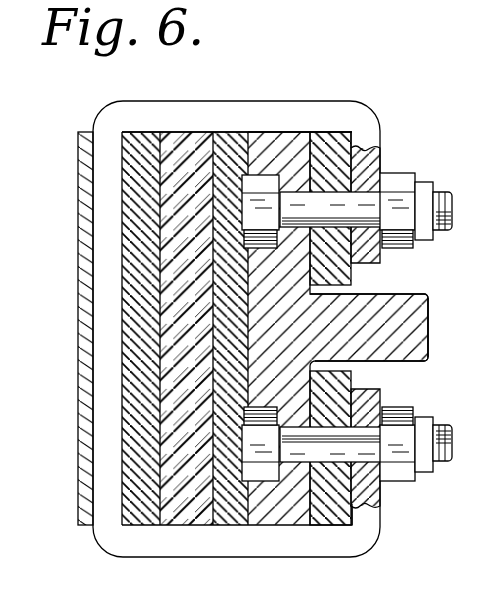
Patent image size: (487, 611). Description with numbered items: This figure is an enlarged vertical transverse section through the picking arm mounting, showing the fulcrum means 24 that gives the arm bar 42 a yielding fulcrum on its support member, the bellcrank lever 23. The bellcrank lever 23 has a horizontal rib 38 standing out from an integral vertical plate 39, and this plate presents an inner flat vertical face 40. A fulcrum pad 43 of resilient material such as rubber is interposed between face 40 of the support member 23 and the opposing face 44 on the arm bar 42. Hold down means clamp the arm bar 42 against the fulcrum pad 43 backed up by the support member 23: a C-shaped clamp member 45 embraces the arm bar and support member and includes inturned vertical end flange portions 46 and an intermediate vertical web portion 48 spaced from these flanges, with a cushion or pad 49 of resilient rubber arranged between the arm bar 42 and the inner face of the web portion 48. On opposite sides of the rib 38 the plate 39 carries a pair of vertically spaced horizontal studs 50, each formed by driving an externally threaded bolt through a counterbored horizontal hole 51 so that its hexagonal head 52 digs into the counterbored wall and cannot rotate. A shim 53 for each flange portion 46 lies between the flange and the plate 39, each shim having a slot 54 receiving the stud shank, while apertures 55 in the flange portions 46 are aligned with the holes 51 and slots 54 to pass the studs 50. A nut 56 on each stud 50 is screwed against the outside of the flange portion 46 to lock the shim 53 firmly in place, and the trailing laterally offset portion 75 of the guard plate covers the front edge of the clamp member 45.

The arm support member 23 is at (429, 332).
The fulcrum means 24 is at (97, 113).
The horizontal rib 38 is at (406, 302).
The vertical plate 39 is at (289, 140).
The inner flat vertical face 40 is at (258, 140).
The arm bar 42 is at (180, 132).
The fulcrum pad 43 is at (233, 513).
The opposing face 44 is at (200, 513).
The clamp member 45 is at (102, 548).
The inturned vertical end flange portions 46 is at (371, 258).
The intermediate vertical web portion 48 is at (100, 314).
The cushion or pad 49 is at (143, 515).
The studs 50 is at (440, 192).
The counterbored horizontal hole 51 is at (292, 194).
The hexagonal heads 52 is at (262, 180).
The shim 53 is at (340, 140).
The slot 54 is at (318, 194).
The apertures 55 is at (392, 192).
The nut 56 is at (406, 178).
The trailing laterally offset portion 75 is at (82, 247).